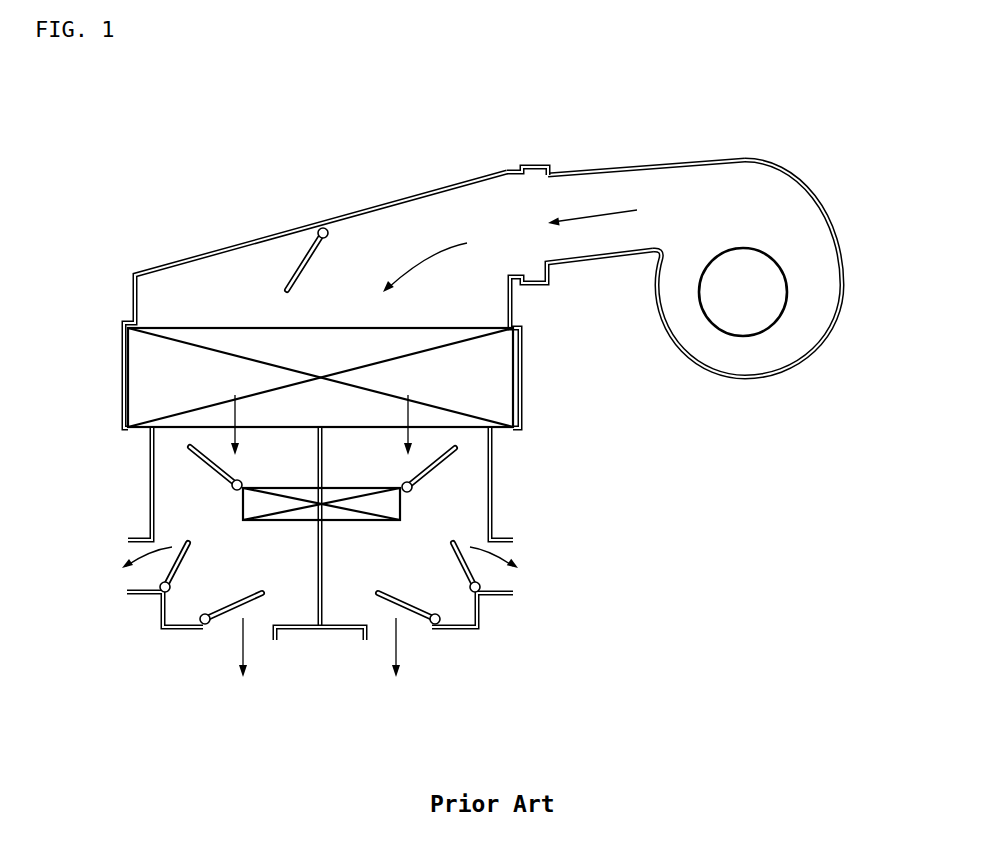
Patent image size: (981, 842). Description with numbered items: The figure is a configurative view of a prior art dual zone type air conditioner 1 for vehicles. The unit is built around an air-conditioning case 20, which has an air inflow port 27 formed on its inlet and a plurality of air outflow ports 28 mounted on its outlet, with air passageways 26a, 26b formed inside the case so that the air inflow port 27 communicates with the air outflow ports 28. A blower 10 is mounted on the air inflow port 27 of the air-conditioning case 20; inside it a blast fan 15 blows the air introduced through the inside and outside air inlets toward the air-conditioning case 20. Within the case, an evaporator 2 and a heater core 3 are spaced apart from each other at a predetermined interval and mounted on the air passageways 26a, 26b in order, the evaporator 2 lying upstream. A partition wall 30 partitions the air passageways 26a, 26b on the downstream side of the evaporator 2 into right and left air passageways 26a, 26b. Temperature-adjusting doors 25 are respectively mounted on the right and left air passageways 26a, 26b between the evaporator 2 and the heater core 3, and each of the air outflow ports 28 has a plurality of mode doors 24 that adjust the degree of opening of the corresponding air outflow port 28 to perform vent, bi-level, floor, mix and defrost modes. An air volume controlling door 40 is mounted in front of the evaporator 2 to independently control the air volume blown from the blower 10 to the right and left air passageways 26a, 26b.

The dual zone type air conditioner 1 is at (202, 204).
The blower 10 is at (789, 268).
The blast fan 15 is at (788, 293).
The air-conditioning case 20 is at (135, 300).
The air inflow port 27 is at (510, 168).
The air volume controlling door 40 is at (300, 262).
The evaporator 2 is at (145, 380).
The heater core 3 is at (255, 504).
The partition wall 30 is at (314, 484).
The temperature-adjusting doors 25 is at (197, 457).
The air passageway 26a is at (264, 427).
The air passageway 26b is at (377, 427).
The mode doors 24 is at (178, 566).
The air outflow ports 28 is at (407, 625).